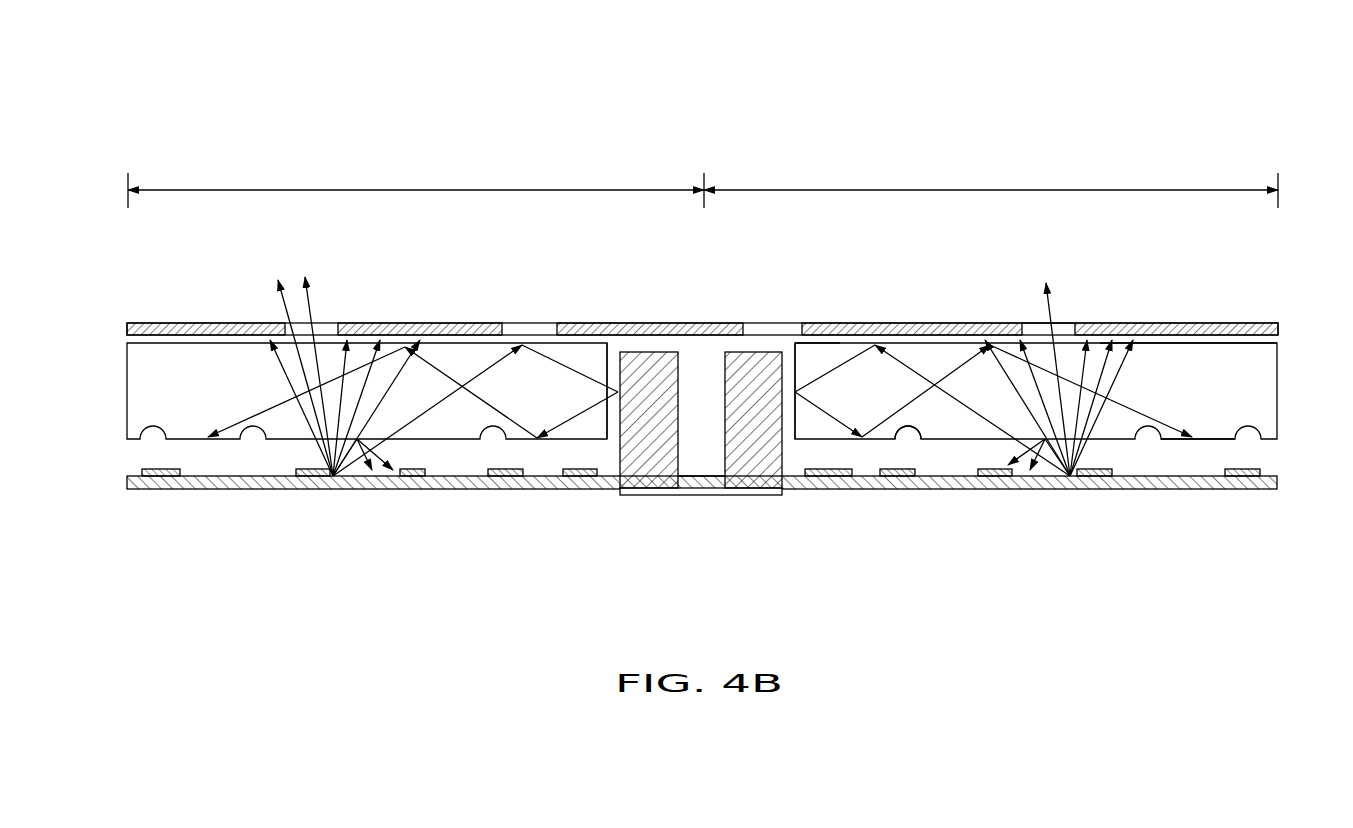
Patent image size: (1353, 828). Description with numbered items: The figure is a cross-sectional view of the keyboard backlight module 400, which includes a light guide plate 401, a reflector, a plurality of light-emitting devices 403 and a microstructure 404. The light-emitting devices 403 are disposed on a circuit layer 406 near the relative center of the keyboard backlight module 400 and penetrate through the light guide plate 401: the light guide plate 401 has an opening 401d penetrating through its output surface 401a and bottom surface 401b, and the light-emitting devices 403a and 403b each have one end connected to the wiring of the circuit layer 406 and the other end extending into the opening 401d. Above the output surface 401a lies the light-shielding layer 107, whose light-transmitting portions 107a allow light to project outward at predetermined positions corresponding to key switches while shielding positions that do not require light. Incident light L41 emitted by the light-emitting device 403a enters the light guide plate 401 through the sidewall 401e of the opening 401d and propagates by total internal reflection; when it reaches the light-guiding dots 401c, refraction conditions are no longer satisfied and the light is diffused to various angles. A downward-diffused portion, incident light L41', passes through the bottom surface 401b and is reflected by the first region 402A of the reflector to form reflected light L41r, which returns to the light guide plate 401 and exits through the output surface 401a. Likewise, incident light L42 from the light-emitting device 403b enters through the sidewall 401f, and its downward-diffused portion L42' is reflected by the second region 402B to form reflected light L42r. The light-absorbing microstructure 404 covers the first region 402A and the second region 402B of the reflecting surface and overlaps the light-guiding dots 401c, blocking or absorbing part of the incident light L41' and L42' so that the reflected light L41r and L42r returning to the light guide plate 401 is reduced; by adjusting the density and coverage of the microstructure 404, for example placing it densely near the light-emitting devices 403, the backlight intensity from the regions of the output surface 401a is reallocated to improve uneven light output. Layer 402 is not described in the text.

The keyboard backlight module 400 is at (97, 78).
The first region 402A is at (416, 183).
The second region 402B is at (991, 183).
The light-shielding layer 107 is at (1208, 323).
The light-transmitting portion 107a is at (1065, 320).
The light guide plate 401 is at (1258, 383).
The output surface 401a is at (1240, 342).
The bottom surface 401b is at (1212, 444).
The light-guiding dot 401c is at (910, 423).
The opening 401d is at (763, 330).
The sidewall 401e is at (610, 366).
The sidewall 401f is at (792, 366).
The substrate 402 is at (1278, 483).
The light-emitting devices 403 is at (782, 556).
The light-emitting device 403a is at (650, 457).
The light-emitting device 403b is at (752, 457).
The microstructure 404 is at (407, 478).
The circuit layer 406 is at (700, 486).
The incident light L41 is at (413, 457).
The reflected light L41r is at (296, 442).
The incident light L41' is at (356, 512).
The incident light L42 is at (993, 469).
The reflected light L42r is at (1125, 433).
The incident light L42' is at (1039, 491).